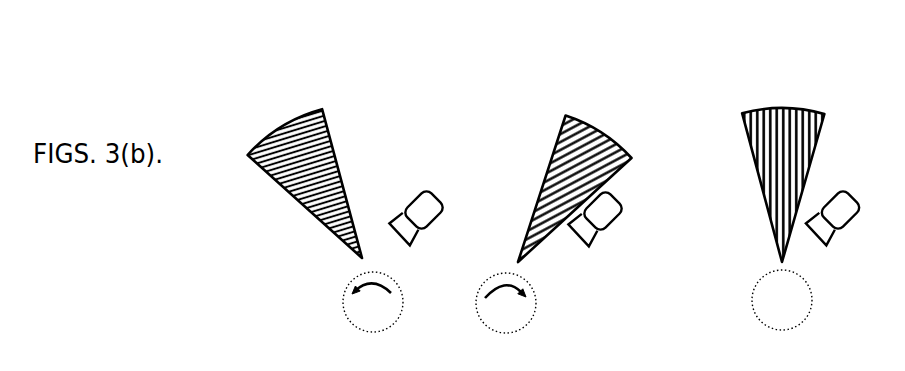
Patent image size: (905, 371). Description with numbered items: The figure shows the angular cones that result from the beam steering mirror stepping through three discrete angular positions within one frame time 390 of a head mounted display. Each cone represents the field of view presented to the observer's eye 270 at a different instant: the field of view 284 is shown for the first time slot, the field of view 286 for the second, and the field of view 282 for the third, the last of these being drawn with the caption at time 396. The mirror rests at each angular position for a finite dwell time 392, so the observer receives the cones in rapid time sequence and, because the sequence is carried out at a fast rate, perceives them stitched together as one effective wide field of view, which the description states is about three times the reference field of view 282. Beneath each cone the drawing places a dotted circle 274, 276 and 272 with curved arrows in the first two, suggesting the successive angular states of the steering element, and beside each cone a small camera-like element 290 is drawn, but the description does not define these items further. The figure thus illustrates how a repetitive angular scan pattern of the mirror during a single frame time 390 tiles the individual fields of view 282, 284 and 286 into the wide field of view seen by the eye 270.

The observer's eye 270 is at (302, 302).
The camera orientation 272 is at (782, 300).
The camera orientation 274 is at (373, 302).
The camera orientation 276 is at (506, 303).
The field of view 282 is at (748, 134).
The field of view 284 is at (272, 137).
The effective field of view 286 is at (552, 140).
The camera 290 is at (610, 188).
The frame time 390 is at (297, 114).
The dwell time 392 is at (557, 121).
The time 396 is at (778, 102).